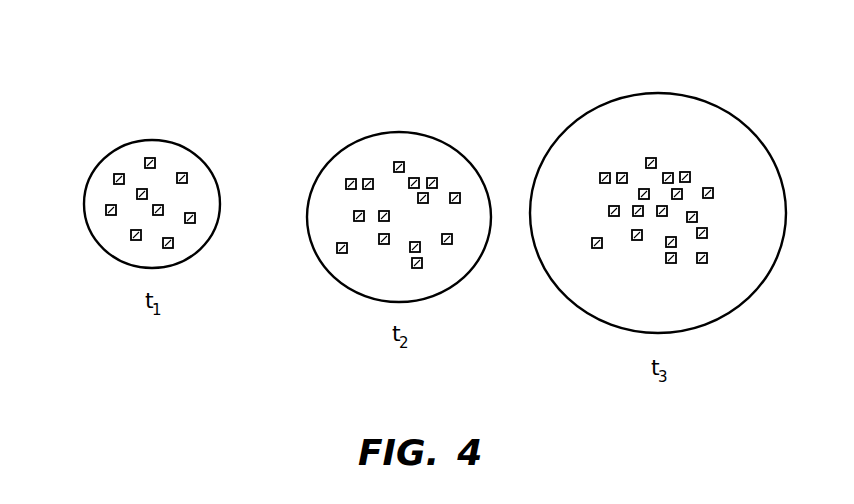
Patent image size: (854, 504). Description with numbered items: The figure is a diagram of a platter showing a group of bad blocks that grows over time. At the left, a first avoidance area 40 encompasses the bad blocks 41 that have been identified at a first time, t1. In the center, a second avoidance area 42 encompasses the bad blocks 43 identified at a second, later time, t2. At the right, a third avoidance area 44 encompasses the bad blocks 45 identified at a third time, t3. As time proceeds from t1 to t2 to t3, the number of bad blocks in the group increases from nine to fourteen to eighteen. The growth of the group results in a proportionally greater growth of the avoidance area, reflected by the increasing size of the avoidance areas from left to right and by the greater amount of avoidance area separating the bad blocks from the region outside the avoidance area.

The first avoidance area 40 is at (172, 141).
The bad blocks 41 is at (108, 169).
The second avoidance area 42 is at (408, 129).
The bad blocks 43 is at (367, 165).
The third avoidance area 44 is at (686, 92).
The bad blocks 45 is at (618, 158).